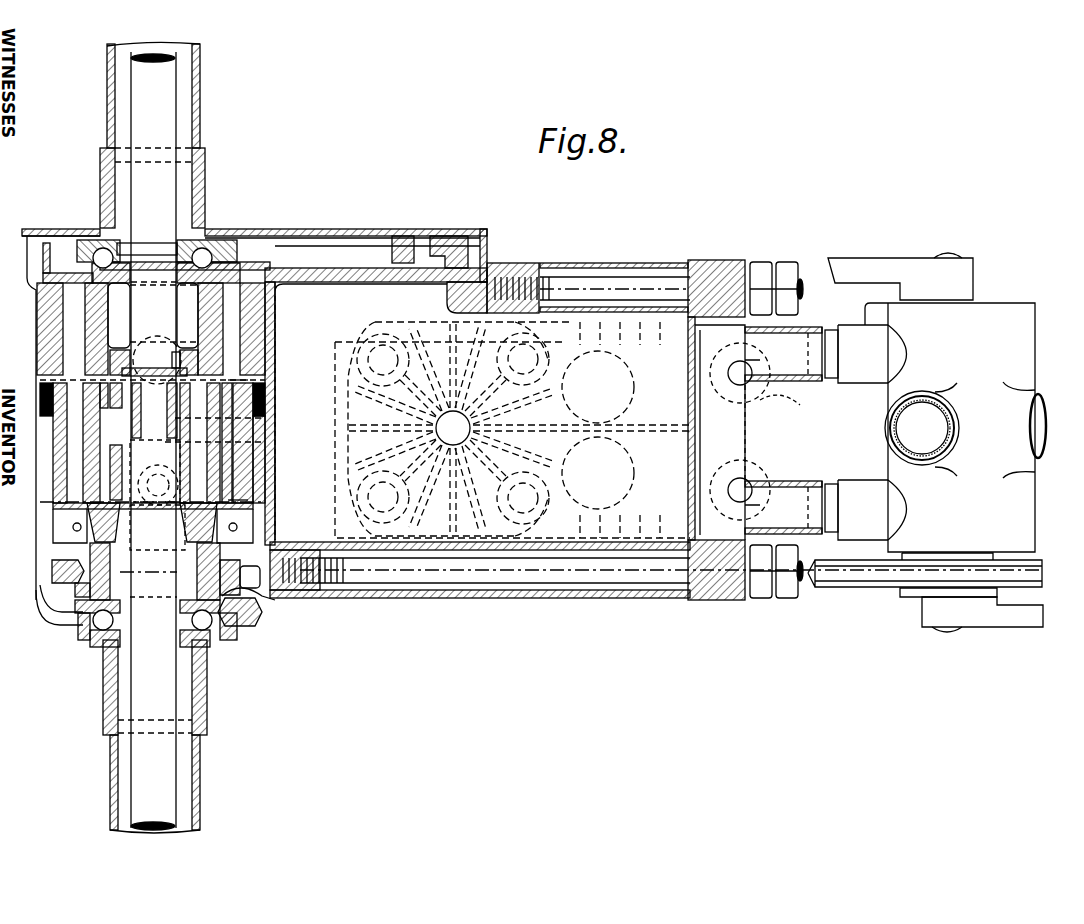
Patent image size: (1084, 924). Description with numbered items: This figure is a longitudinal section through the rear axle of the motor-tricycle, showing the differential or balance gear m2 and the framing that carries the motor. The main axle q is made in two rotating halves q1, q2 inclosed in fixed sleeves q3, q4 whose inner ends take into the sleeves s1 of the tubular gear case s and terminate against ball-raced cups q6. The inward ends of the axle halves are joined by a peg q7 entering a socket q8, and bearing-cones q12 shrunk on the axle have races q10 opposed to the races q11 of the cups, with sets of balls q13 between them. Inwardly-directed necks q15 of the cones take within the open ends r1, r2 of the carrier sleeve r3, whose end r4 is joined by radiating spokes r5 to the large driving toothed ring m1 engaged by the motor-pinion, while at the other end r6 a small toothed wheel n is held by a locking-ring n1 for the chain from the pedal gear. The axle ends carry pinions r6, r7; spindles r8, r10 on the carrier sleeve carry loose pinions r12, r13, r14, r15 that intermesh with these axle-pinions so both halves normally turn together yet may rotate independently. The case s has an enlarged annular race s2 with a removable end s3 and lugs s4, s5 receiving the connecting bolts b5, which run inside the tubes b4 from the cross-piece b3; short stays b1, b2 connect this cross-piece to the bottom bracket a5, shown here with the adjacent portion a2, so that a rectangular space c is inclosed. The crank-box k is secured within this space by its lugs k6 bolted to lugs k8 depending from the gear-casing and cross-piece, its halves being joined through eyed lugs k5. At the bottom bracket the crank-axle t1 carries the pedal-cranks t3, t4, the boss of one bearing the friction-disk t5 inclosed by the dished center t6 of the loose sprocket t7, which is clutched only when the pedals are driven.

The main axle q is at (172, 50).
The rotating axle half q1 is at (153, 441).
The rotating axle half q2 is at (147, 666).
The fixed sleeve q3 is at (200, 107).
The fixed sleeve q4 is at (202, 765).
The ball-raced cup q6 is at (205, 255).
The peg q7 is at (155, 444).
The socket q8 is at (152, 368).
The ball-race q10 is at (262, 262).
The ball-race q11 is at (222, 262).
The bearing-cone q12 is at (95, 240).
The balls q13 is at (206, 245).
The inwardly-directed neck q15 is at (278, 310).
The gear case s is at (270, 398).
The sleeve of gear case s1 is at (206, 183).
The enlarged annular race s2 is at (480, 236).
The removable end s3 is at (330, 236).
The lug s4 is at (562, 250).
The lug s5 is at (312, 548).
The open end of carrier sleeve r1 is at (250, 262).
The open end of carrier sleeve r2 is at (262, 616).
The carrier sleeve r3 is at (262, 356).
The end of carrier sleeve r4 is at (315, 236).
The radiating arms or spokes r5 is at (380, 232).
The axle-pinion r6 is at (205, 470).
The axle-pinion r7 is at (275, 412).
The longitudinal spindle r8 is at (78, 324).
The longitudinal spindle r10 is at (240, 492).
The loose pinion r12 is at (55, 520).
The loose pinion r13 is at (42, 398).
The loose pinion r14 is at (262, 476).
The loose pinion r15 is at (240, 386).
The large driving toothed wheel m1 is at (480, 255).
The differential or balance gear m2 is at (470, 236).
The crank-box k is at (318, 326).
The coincidently-eyed lug k5 is at (148, 582).
The lug or projection k6 is at (780, 410).
The lug k8 is at (752, 358).
The rectangular space c is at (512, 421).
The fixed clutch-plate or friction-disk t5 is at (420, 335).
The dished center part t6 is at (619, 411).
The small driving toothed wheel n is at (575, 436).
The locking-ring n1 is at (245, 580).
The short stay b1 is at (830, 475).
The short stay b2 is at (822, 385).
The junction or cross piece b3 is at (724, 428).
The tube or sleeve b4 is at (518, 595).
The connecting bolt or stay b5 is at (443, 575).
The inlet opening a2 is at (965, 428).
The bottom bracket a5 is at (950, 427).
The crank-axle t1 is at (948, 254).
The pedal-crank t3 is at (1008, 628).
The pedal-crank t4 is at (880, 260).
The loose sprocket driving-wheel t7 is at (852, 588).